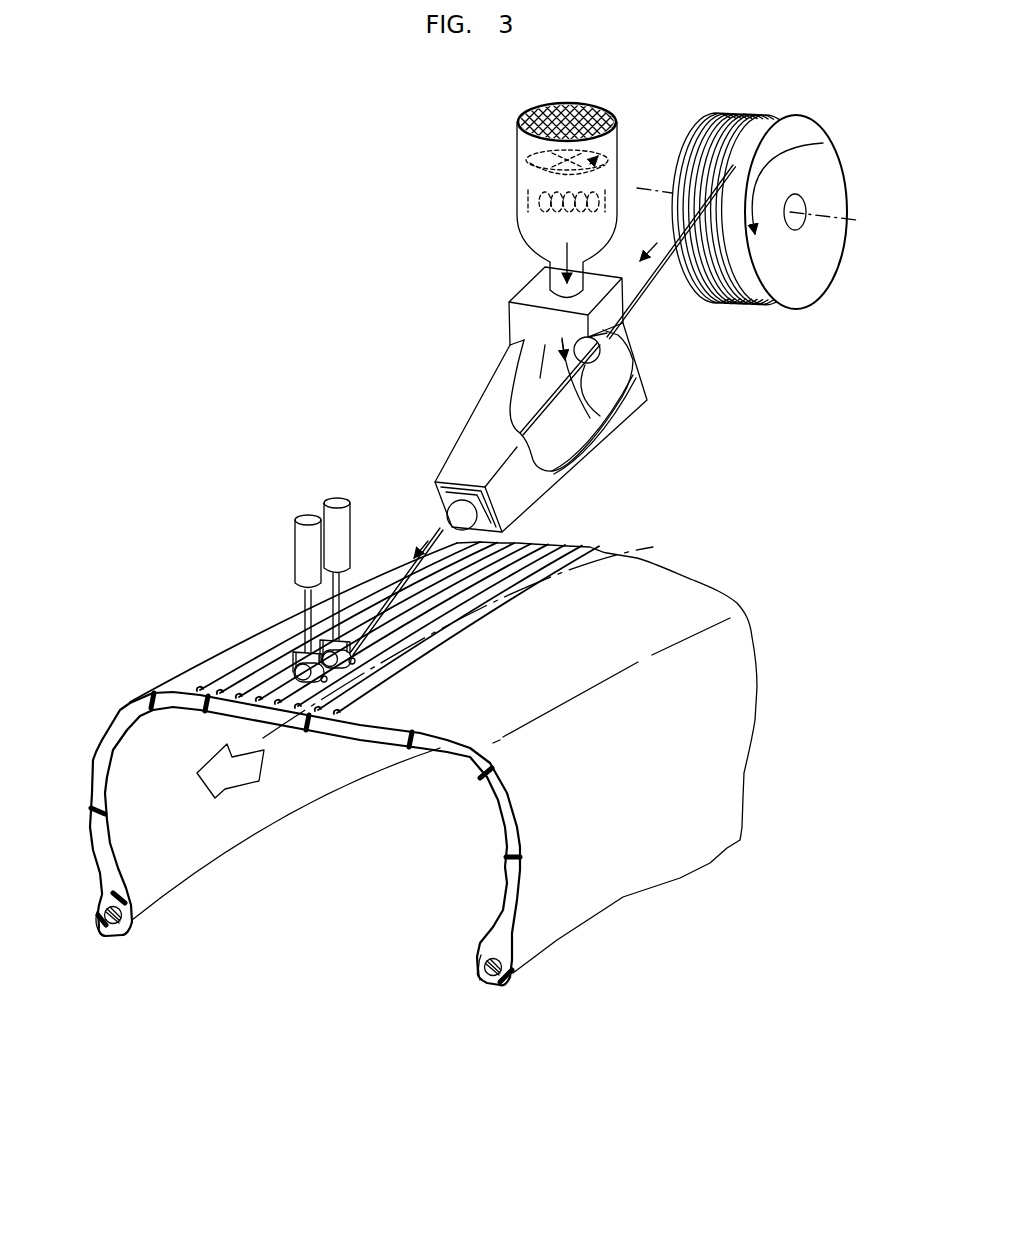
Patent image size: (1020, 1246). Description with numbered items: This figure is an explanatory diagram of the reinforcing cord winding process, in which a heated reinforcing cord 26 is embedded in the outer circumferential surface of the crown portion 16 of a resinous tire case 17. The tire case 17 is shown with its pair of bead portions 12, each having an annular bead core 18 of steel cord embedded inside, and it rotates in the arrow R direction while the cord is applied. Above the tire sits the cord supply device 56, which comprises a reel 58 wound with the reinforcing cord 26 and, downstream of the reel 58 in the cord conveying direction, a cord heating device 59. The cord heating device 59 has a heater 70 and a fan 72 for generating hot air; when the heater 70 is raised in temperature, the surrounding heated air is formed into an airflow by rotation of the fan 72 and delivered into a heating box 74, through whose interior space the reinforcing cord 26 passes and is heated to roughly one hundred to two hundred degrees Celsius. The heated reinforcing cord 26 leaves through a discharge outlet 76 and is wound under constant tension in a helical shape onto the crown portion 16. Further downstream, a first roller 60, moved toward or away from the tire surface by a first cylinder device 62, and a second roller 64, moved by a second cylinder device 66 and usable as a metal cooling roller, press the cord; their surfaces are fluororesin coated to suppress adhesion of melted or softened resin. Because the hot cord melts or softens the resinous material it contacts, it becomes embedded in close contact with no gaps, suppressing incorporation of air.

The bead portion 12 is at (108, 937).
The crown portion 16 is at (232, 678).
The tire case 17 is at (265, 765).
The bead core 18 is at (124, 917).
The reinforcing cord 26 is at (206, 673).
The cord supply device 56 is at (408, 233).
The reel 58 is at (782, 280).
The cord heating device 59 is at (662, 412).
The first roller 60 is at (355, 661).
The first cylinder device 62 is at (340, 497).
The second roller 64 is at (327, 681).
The second cylinder device 66 is at (297, 524).
The heater 70 is at (517, 208).
The fan 72 is at (618, 150).
The heating box 74 is at (488, 380).
The discharge outlet 76 is at (437, 524).